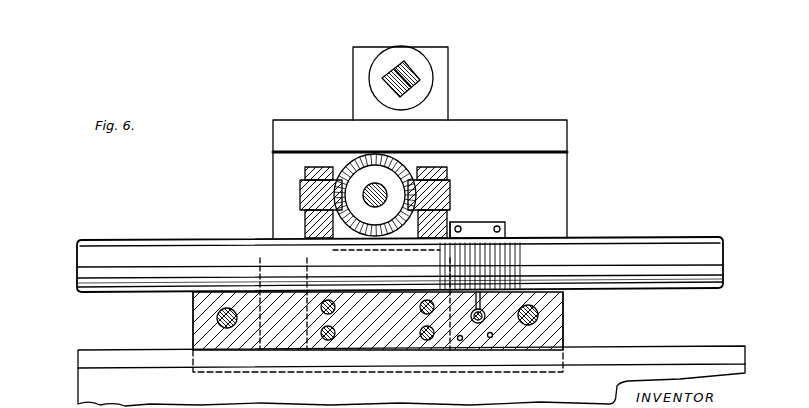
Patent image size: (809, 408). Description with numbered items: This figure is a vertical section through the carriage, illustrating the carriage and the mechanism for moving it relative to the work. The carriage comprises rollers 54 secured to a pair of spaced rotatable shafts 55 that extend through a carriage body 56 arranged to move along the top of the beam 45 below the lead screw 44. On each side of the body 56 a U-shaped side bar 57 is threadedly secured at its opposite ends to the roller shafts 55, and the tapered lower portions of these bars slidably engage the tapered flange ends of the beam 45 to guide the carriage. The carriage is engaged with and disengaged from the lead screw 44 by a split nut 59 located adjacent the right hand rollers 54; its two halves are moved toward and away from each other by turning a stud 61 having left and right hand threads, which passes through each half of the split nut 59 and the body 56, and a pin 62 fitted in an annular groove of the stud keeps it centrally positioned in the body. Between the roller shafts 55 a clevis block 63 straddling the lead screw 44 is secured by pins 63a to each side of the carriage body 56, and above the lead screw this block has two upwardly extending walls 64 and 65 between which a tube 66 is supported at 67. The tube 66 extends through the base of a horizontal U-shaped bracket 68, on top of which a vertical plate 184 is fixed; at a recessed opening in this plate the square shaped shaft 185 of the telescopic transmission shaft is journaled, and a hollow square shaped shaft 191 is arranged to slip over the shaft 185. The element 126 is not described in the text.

The lead screw 44 is at (92, 262).
The beam 45 is at (125, 349).
The rollers 54 is at (193, 318).
The rotatable shafts 55 is at (230, 309).
The carriage body 56 is at (293, 325).
The U-shaped side bar 57 is at (197, 373).
The split nut 59 is at (505, 222).
The stud 61 is at (477, 326).
The pin 62 is at (492, 323).
The clevis block 63 is at (318, 292).
The pins 63a is at (383, 313).
The upwardly extending wall 64 is at (304, 214).
The upwardly extending wall 65 is at (455, 221).
The tube 66 is at (404, 162).
The tube support 67 is at (334, 169).
The horizontal U-shaped bracket 68 is at (567, 128).
The shaft 126 is at (375, 187).
The vertical plate 184 is at (449, 62).
The square shaped shaft 185 is at (405, 68).
The hollow square shaped shaft 191 is at (386, 73).